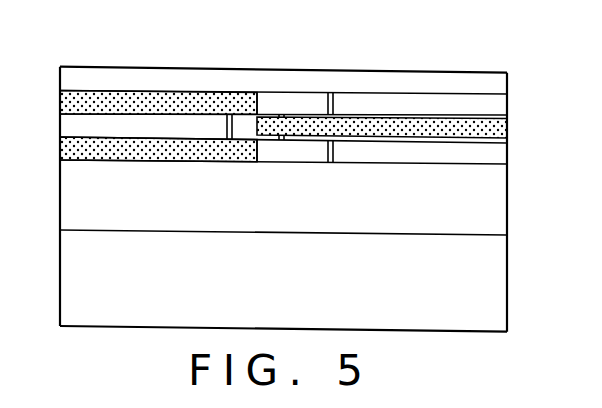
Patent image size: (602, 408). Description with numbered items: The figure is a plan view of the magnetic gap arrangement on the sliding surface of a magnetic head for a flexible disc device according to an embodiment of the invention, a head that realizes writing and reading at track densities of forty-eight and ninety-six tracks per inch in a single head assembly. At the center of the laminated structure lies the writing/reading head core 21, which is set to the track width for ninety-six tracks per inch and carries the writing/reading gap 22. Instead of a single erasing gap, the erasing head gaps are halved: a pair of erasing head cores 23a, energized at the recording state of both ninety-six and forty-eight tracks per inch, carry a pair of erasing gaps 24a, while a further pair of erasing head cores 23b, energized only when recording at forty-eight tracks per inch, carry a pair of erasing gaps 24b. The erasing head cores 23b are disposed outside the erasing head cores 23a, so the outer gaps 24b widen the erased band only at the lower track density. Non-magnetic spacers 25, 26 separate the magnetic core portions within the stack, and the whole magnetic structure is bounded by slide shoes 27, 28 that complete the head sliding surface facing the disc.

The writing/reading head core 21 is at (60, 123).
The writing/reading gap 22 is at (230, 128).
The erasing head core 23a is at (508, 115).
The erasing head core 23b is at (408, 156).
The erasing gap 24a is at (287, 139).
The erasing gap 24b is at (336, 155).
The non-magnetic spacer 25 is at (120, 144).
The non-magnetic spacer 26 is at (448, 128).
The slide shoe 27 is at (505, 61).
The slide shoe 28 is at (503, 313).